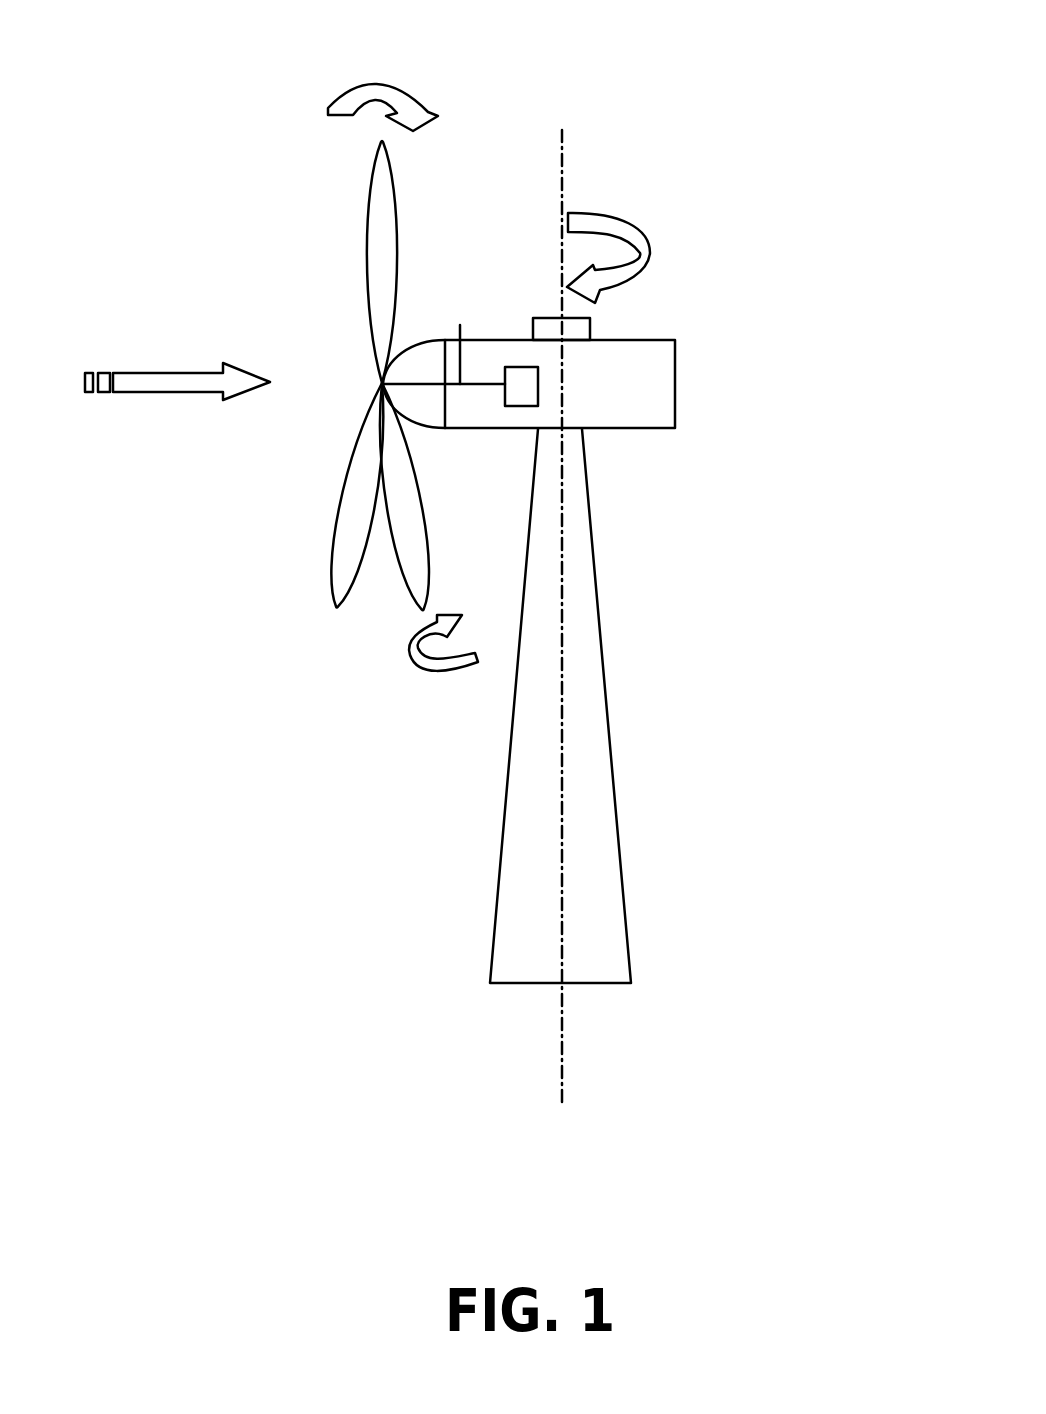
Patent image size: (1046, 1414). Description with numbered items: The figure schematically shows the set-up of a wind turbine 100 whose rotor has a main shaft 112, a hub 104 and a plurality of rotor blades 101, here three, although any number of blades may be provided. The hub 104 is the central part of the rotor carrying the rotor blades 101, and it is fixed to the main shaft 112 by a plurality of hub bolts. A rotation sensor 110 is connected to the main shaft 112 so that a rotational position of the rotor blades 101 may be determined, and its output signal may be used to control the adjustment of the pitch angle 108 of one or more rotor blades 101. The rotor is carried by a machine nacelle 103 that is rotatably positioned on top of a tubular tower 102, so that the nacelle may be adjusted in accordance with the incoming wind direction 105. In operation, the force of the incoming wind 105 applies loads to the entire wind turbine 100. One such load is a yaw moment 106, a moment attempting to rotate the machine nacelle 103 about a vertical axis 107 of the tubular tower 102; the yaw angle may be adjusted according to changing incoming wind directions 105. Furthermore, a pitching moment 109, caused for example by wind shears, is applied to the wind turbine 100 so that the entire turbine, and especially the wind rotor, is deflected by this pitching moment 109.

The wind turbine 100 is at (753, 106).
The rotor blades 101 is at (365, 282).
The tubular tower 102 is at (610, 740).
The machine nacelle 103 is at (676, 388).
The hub 104 is at (424, 346).
The incoming wind direction 105 is at (225, 397).
The yaw moment 106 is at (650, 254).
The vertical axis 107 is at (562, 132).
The pitch angle 108 is at (410, 652).
The pitching moment 109 is at (330, 112).
The rotation sensor 110 is at (520, 406).
The main shaft 112 is at (488, 340).